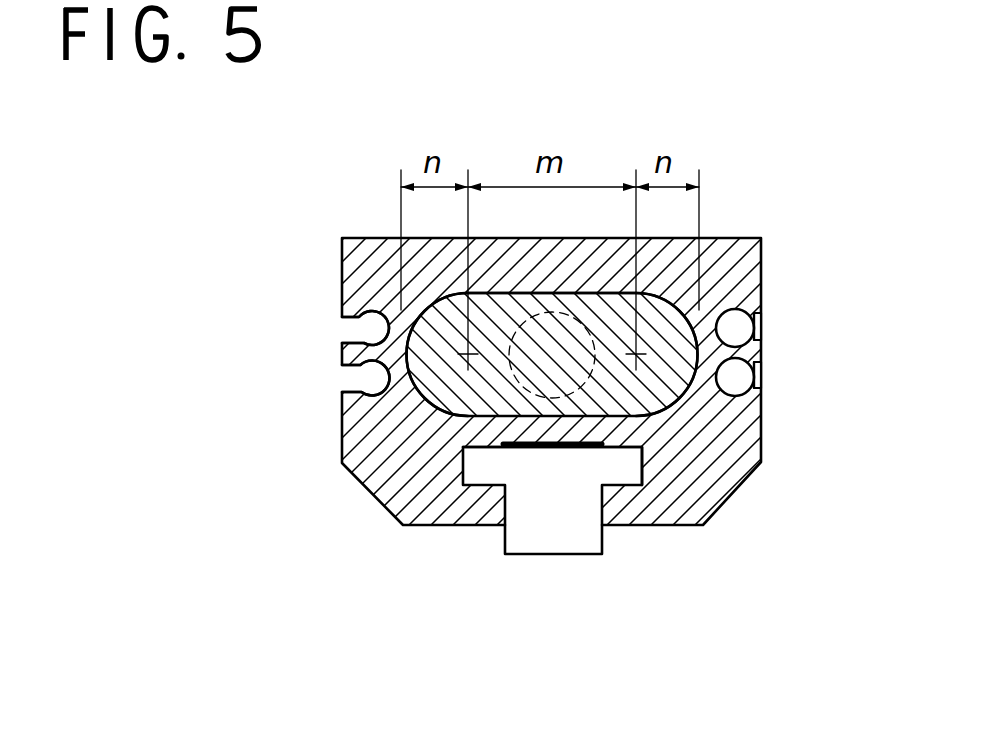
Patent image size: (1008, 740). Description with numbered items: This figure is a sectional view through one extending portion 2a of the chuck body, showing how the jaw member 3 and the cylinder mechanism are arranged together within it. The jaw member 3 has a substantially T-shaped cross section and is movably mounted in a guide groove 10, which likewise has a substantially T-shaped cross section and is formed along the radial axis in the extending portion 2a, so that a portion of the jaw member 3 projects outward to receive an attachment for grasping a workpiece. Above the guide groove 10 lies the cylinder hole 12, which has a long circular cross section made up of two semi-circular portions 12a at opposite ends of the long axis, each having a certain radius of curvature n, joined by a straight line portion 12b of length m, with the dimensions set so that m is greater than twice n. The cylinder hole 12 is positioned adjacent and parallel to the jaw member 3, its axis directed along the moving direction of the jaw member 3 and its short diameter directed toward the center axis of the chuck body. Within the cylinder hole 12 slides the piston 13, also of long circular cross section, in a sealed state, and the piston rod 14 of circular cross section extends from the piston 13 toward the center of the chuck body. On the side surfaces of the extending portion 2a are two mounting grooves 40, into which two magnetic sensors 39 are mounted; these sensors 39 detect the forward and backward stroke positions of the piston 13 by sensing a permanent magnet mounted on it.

The extending portion 2a is at (750, 270).
The jaw member 3 is at (575, 538).
The guide groove 10 is at (642, 463).
The cylinder hole 12 is at (413, 395).
The semi-circular portion 12a is at (407, 296).
The straight line portion 12b is at (572, 292).
The piston 13 is at (683, 373).
The piston rod 14 is at (522, 383).
The magnetic sensor 39 is at (732, 328).
The mounting groove 40 is at (758, 320).